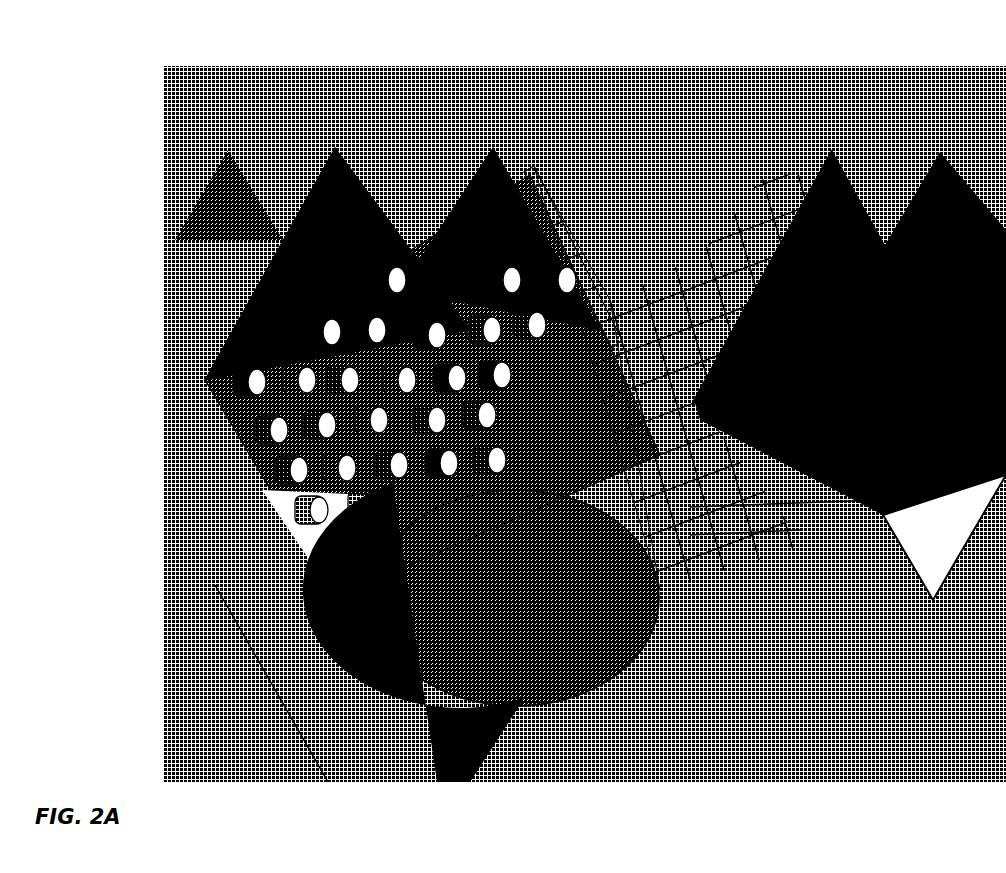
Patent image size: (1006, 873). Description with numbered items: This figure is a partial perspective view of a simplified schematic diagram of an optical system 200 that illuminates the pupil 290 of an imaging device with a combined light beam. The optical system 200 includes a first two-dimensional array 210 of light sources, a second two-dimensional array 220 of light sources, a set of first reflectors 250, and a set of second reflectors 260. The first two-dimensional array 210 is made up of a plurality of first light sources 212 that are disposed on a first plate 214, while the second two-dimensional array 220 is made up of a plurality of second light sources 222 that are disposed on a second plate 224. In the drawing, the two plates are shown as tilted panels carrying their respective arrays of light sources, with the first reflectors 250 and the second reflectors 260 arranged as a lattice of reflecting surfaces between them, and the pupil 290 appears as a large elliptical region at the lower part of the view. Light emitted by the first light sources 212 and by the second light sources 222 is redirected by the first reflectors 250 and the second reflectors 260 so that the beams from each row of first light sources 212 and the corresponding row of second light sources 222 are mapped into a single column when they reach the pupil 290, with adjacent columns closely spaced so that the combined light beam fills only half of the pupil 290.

The optical system 200 is at (345, 55).
The first two-dimensional array of light sources 210 is at (498, 128).
The first light sources 212 is at (553, 277).
The first plate 214 is at (487, 200).
The second two-dimensional array of light sources 220 is at (325, 138).
The second light sources 222 is at (395, 290).
The second plate 224 is at (283, 297).
The first reflectors 250 is at (798, 193).
The second reflectors 260 is at (745, 205).
The pupil 290 is at (632, 665).